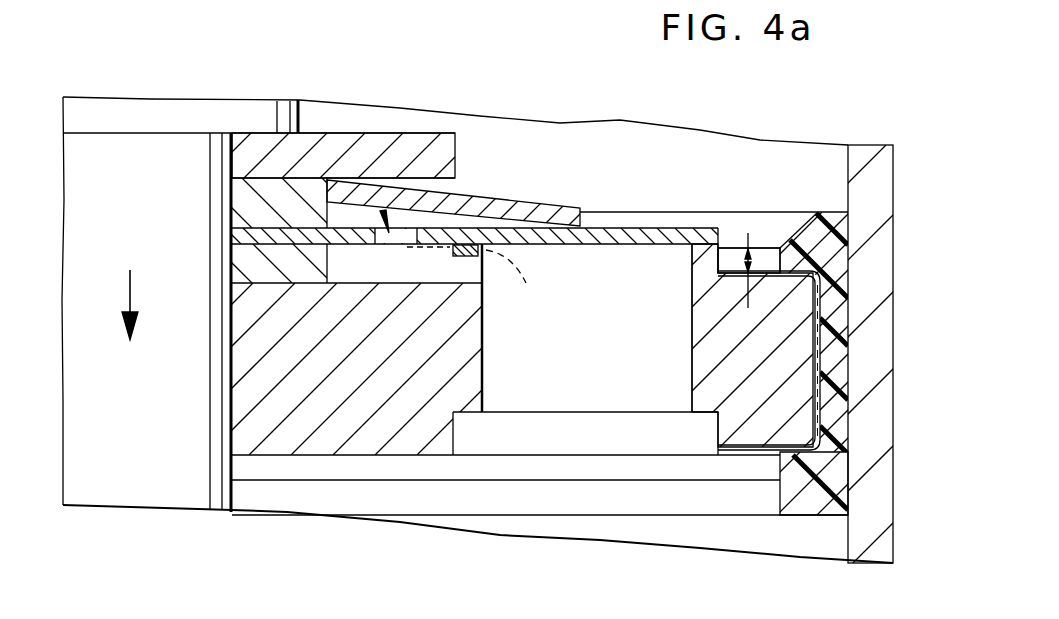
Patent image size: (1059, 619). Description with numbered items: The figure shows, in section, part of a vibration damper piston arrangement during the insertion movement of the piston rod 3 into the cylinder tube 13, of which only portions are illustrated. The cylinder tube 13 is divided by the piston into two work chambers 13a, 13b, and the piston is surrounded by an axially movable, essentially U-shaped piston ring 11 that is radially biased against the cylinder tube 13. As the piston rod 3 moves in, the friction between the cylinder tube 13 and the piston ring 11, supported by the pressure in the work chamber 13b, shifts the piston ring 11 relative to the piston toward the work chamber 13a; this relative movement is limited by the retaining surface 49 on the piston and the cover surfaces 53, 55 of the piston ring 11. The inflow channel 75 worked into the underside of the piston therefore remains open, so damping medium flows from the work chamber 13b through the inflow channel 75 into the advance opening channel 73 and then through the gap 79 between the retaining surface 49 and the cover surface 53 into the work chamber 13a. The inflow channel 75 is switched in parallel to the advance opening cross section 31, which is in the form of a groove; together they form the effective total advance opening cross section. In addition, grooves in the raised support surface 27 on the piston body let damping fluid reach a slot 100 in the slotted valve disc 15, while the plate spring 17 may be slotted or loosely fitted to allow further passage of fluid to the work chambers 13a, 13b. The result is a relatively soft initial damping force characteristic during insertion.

The piston rod 3 is at (180, 170).
The piston ring 11 is at (837, 397).
The cylinder tube 13 is at (870, 537).
The work chamber 13a is at (634, 164).
The work chamber 13b is at (578, 504).
The valve disc 15 is at (662, 236).
The plate spring 17 is at (520, 205).
The raised support surface 27 is at (473, 247).
The advance opening cross section 31 is at (490, 256).
The retaining surface 49 is at (735, 285).
The cover surface 53 is at (797, 268).
The cover surface 55 is at (803, 478).
The advance opening channel 73 is at (818, 360).
The inflow channel 75 is at (733, 456).
The gap 79 is at (745, 262).
The slot 100 is at (403, 238).